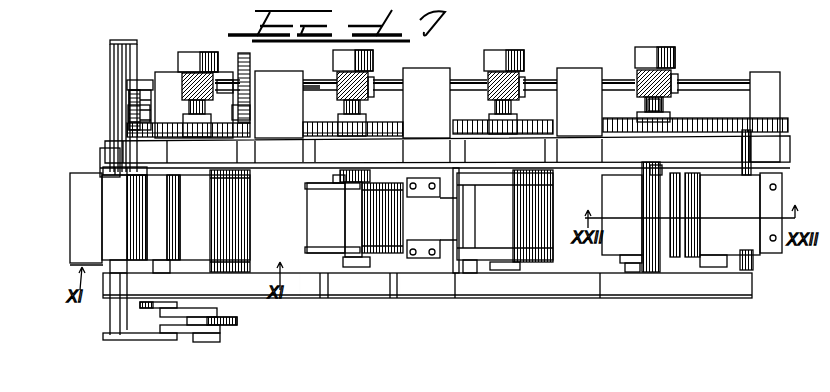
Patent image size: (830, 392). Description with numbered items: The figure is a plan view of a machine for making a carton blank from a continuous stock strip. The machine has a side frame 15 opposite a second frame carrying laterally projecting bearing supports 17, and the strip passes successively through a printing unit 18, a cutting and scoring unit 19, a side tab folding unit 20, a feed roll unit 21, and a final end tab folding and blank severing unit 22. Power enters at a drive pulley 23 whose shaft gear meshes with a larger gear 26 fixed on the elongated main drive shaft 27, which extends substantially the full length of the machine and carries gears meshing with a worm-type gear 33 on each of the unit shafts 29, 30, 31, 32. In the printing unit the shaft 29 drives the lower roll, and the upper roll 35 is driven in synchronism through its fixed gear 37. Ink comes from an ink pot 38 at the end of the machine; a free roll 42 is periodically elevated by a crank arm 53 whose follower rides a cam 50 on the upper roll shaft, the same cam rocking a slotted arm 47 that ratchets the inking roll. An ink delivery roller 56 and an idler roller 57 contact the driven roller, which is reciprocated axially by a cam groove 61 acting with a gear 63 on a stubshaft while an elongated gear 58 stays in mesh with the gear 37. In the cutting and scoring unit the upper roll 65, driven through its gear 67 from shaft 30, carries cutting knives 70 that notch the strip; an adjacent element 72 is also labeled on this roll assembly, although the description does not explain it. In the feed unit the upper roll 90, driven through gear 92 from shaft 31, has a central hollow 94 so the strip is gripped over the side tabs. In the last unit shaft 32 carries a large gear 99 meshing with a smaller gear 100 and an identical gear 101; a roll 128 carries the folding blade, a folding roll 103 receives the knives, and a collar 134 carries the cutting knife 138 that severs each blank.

The side frame 15 is at (622, 283).
The bearing support 17 is at (584, 87).
The printing unit 18 is at (570, 150).
The cutting and scoring unit 19 is at (323, 265).
The side tab folding unit 20 is at (431, 271).
The feed roll unit 21 is at (560, 264).
The end tab folding and blank severing unit 22 is at (769, 265).
The drive pulley 23 is at (120, 70).
The gear 26 is at (250, 66).
The main drive shaft 27 is at (317, 88).
The shaft 29 is at (240, 115).
The shaft 30 is at (360, 108).
The shaft 31 is at (513, 108).
The shaft 32 is at (665, 107).
The gear 33 is at (192, 73).
The upper roll 35 is at (233, 227).
The gear 37 is at (222, 138).
The ink pot 38 is at (82, 240).
The free roll 42 is at (103, 177).
The slotted arm 47 is at (193, 337).
The cam 50 is at (237, 318).
The crank arm 53 is at (148, 305).
The ink delivery roller 56 is at (170, 222).
The idler roller 57 is at (128, 213).
The elongated gear 58 is at (130, 133).
The cam groove 61 is at (143, 80).
The gear 63 is at (125, 128).
The upper roll 65 is at (322, 210).
The gear 67 is at (375, 133).
The cutting knife 70 is at (370, 265).
The spindle 72 is at (355, 225).
The upper roll 90 is at (553, 176).
The gear 92 is at (537, 130).
The hollow 94 is at (548, 198).
The gear 99 is at (614, 130).
The gear 100 is at (668, 128).
The gear 101 is at (740, 129).
The folding roll 103 is at (622, 236).
The roll 128 is at (660, 202).
The collar 134 is at (730, 227).
The cutting knife 138 is at (768, 197).